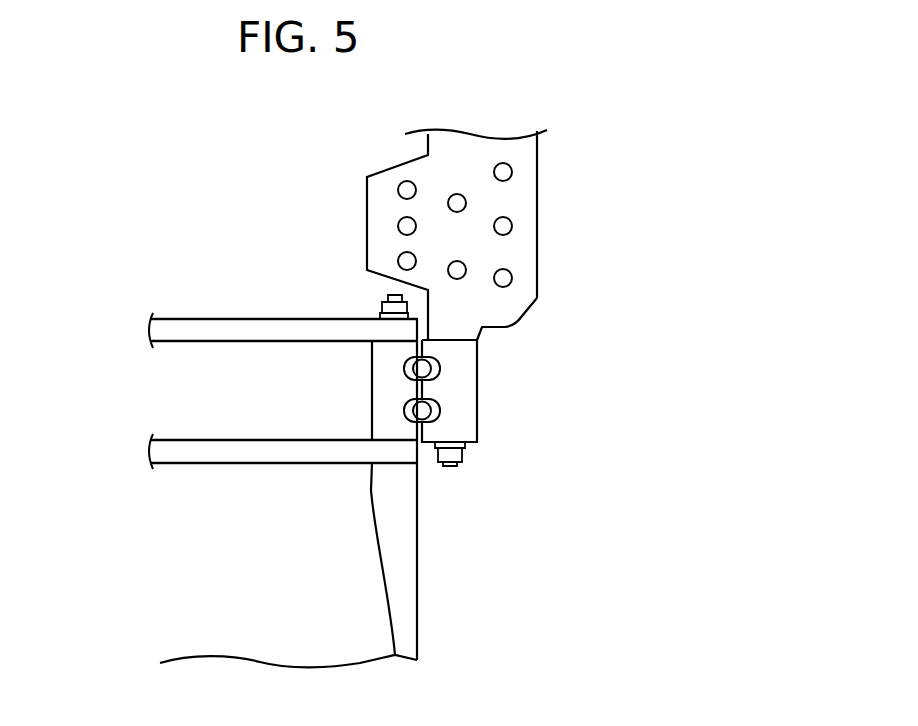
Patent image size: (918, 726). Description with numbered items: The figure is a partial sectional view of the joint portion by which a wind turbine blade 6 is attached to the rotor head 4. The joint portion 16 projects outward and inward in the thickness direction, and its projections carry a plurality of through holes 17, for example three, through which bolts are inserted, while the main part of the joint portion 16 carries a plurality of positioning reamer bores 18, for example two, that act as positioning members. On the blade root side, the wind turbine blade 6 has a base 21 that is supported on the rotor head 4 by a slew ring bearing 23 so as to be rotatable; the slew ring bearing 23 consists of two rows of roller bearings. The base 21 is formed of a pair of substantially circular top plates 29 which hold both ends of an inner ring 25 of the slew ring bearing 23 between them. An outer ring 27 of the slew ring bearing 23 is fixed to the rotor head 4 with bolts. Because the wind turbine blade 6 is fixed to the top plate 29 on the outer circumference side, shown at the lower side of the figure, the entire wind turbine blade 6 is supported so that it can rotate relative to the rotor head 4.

The rotor head 4 is at (538, 298).
The wind turbine blade 6 is at (417, 564).
The joint portion 16 is at (513, 250).
The through holes 17 is at (398, 190).
The positioning reamer bores 18 is at (452, 194).
The base 21 is at (150, 397).
The slew ring bearing 23 is at (514, 384).
The inner ring 25 is at (372, 405).
The outer ring 27 is at (478, 425).
The top plates 29 is at (190, 319).